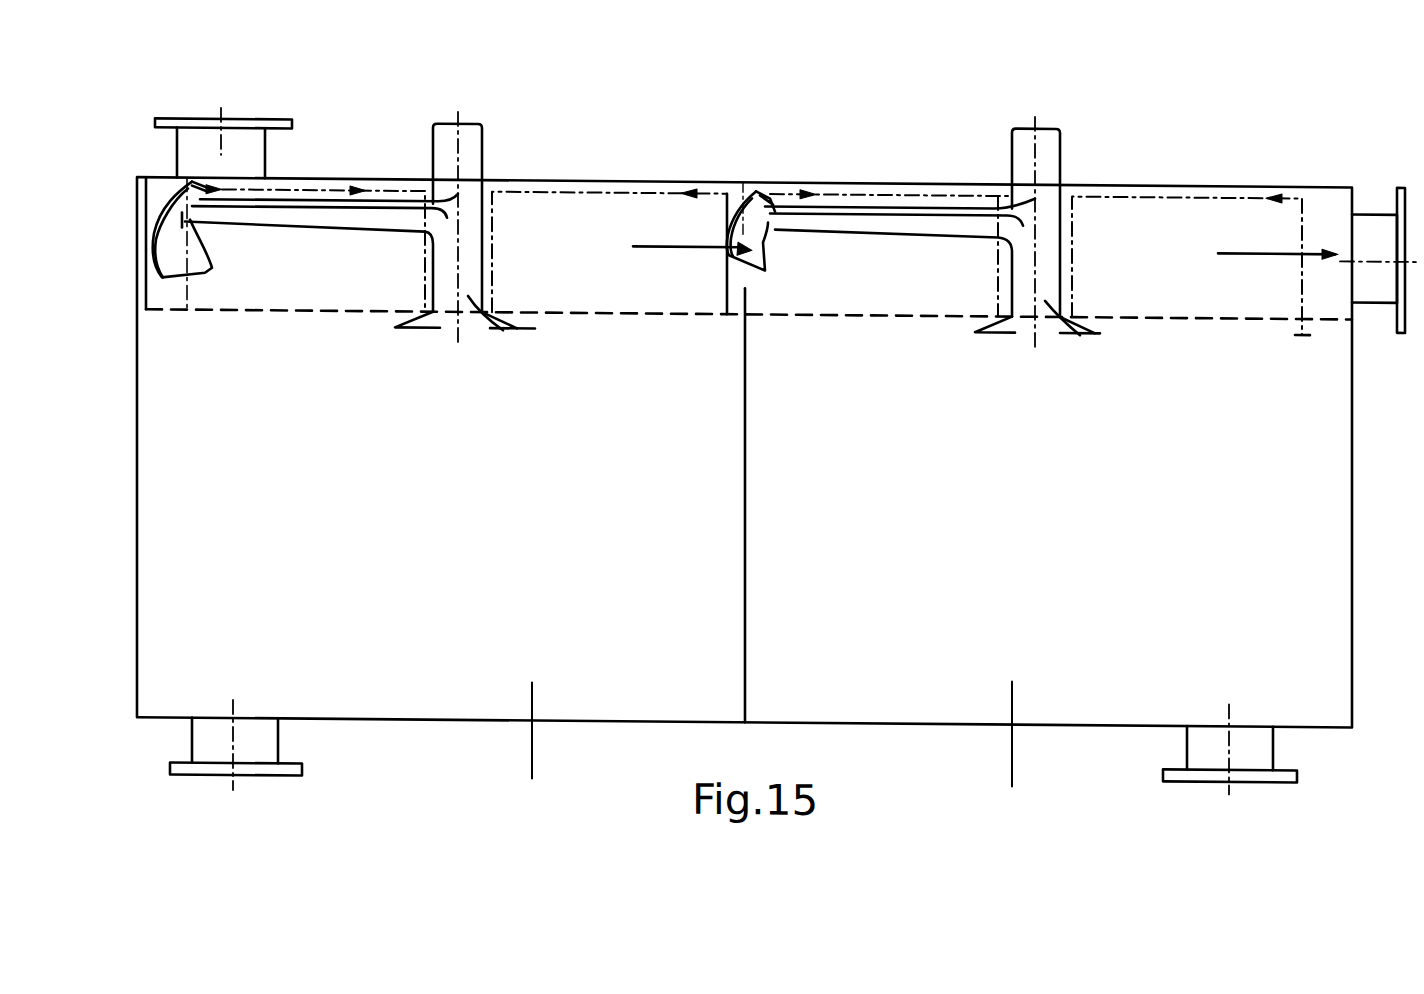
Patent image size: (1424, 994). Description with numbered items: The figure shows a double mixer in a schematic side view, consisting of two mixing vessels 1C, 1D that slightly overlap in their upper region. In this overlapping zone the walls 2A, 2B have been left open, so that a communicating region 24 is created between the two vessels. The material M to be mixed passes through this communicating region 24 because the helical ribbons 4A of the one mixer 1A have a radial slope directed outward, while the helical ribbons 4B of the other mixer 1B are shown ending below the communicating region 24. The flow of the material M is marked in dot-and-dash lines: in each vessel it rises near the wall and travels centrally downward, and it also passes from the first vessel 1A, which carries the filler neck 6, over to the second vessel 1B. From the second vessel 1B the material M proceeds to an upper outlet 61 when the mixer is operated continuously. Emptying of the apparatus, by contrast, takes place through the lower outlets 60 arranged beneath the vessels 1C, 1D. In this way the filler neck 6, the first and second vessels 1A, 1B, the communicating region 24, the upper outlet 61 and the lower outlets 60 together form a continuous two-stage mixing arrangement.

The filler neck 6 is at (247, 115).
The first vessel 1A is at (327, 173).
The wall 2A is at (555, 187).
The material to be mixed M is at (740, 244).
The communicating region 24 is at (747, 184).
The wall 2B is at (893, 184).
The second vessel 1B is at (975, 171).
The upper outlet 61 is at (1375, 203).
The helical ribbons 4A is at (170, 246).
The helical ribbons 4B is at (763, 263).
The mixing vessel 1C is at (535, 749).
The mixing vessel 1D is at (1013, 754).
The lower outlet 60 is at (252, 751).